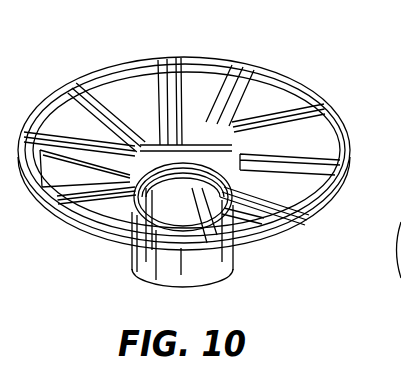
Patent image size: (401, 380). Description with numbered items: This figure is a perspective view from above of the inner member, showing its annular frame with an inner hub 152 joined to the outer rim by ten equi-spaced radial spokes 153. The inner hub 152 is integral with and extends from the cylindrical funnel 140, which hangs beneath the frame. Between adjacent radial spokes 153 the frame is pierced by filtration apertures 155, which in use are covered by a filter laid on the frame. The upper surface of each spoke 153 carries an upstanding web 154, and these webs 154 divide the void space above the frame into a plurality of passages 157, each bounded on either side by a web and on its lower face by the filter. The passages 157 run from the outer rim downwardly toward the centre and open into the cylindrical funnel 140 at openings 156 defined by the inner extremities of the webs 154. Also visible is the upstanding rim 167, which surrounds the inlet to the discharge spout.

The cylindrical funnel 140 is at (225, 283).
The inner hub 152 is at (158, 284).
The radial spoke 153 is at (82, 210).
The upstanding web 154 is at (300, 213).
The filtration aperture 155 is at (214, 88).
The opening 156 is at (268, 107).
The passage 157 is at (130, 96).
The rim 167 is at (192, 190).